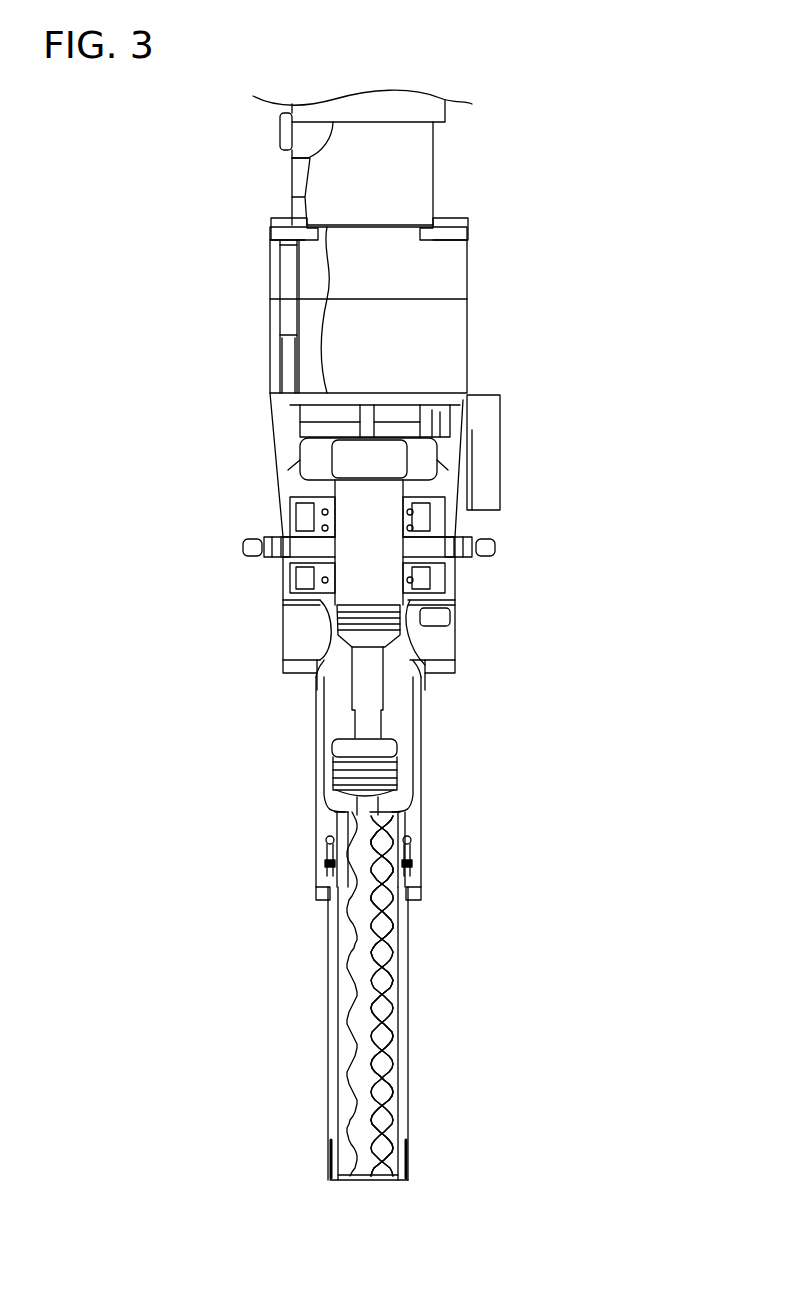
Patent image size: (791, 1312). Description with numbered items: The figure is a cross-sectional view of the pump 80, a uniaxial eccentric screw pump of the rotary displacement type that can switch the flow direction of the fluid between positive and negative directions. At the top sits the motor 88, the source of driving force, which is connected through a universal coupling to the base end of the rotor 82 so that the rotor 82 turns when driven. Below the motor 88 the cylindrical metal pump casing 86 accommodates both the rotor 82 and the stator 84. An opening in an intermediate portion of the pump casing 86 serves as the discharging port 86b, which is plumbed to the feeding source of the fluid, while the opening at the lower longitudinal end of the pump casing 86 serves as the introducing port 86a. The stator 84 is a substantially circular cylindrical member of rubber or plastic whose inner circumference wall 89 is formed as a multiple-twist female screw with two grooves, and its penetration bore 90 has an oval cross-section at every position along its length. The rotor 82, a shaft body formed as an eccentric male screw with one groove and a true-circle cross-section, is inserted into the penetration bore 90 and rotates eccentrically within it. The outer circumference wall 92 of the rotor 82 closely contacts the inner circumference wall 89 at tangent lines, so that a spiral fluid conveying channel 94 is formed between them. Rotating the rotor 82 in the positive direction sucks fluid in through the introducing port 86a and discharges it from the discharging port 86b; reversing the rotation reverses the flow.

The pump 80 is at (222, 305).
The motor 88 is at (455, 331).
The discharging port 86b is at (292, 637).
The pump casing 86 is at (320, 843).
The inner circumference wall 89 is at (387, 875).
The penetration bore 90 is at (385, 880).
The fluid conveying channel 94 is at (443, 996).
The rotor 82 is at (357, 935).
The stator 84 is at (345, 970).
The outer circumference wall 92 is at (373, 937).
The introducing port 86a is at (333, 1180).